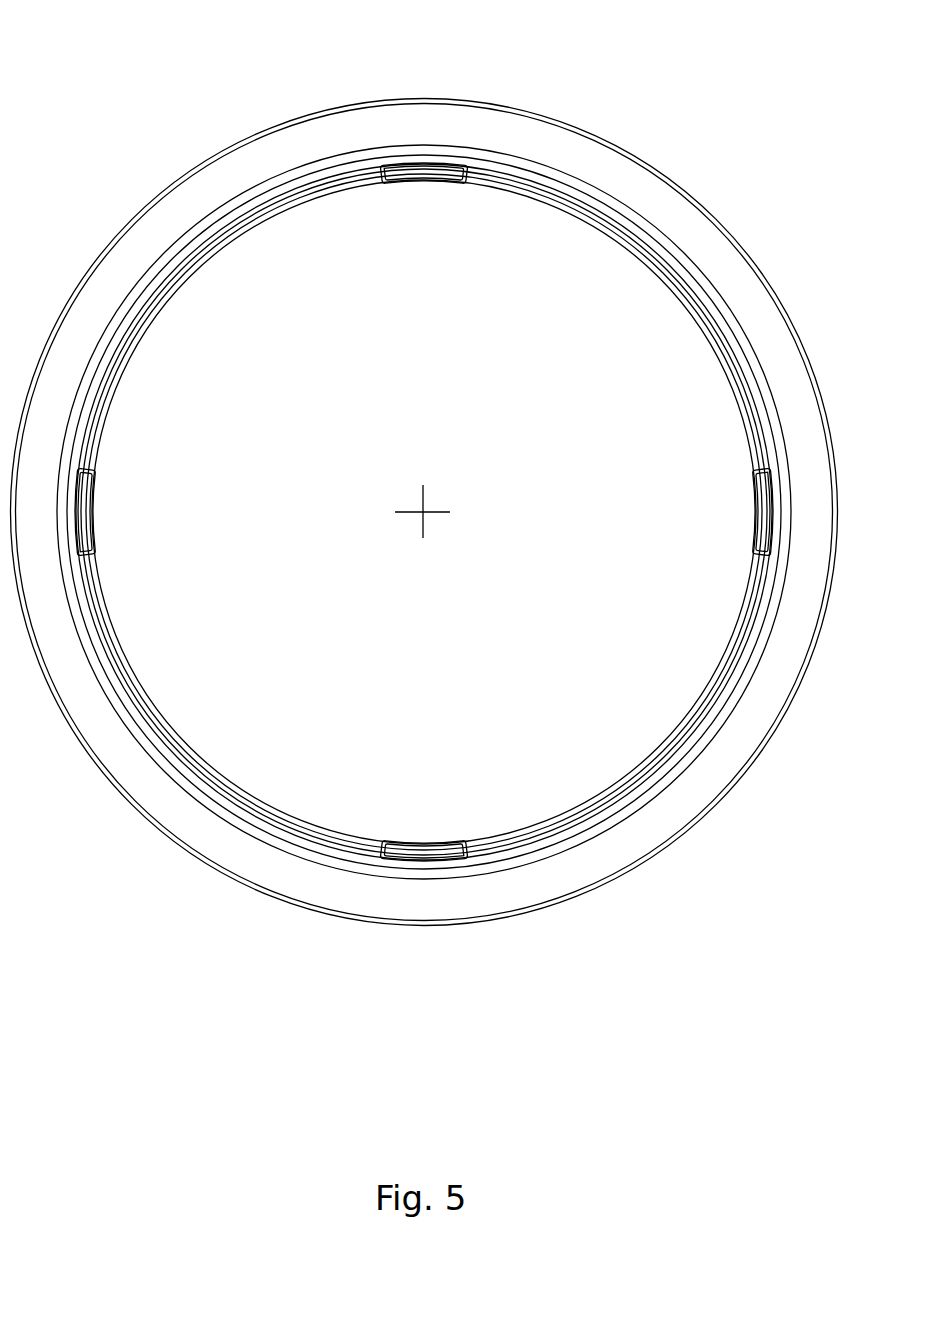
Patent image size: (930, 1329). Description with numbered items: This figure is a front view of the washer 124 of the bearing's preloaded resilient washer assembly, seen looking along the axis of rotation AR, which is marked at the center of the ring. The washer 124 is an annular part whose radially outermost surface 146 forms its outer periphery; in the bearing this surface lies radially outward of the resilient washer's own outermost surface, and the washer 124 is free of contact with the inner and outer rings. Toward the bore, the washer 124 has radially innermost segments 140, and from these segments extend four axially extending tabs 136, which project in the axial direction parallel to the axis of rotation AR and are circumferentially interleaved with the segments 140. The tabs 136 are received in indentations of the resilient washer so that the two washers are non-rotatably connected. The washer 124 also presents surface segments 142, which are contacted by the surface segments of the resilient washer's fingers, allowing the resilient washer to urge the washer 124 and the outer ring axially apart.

The washer 124 is at (690, 91).
The radially outermost surface 146 is at (466, 100).
The surface segments 142 is at (308, 188).
The radially innermost segments 140 is at (578, 212).
The axially extending tabs 136 is at (423, 181).
The axis of rotation AR is at (423, 512).